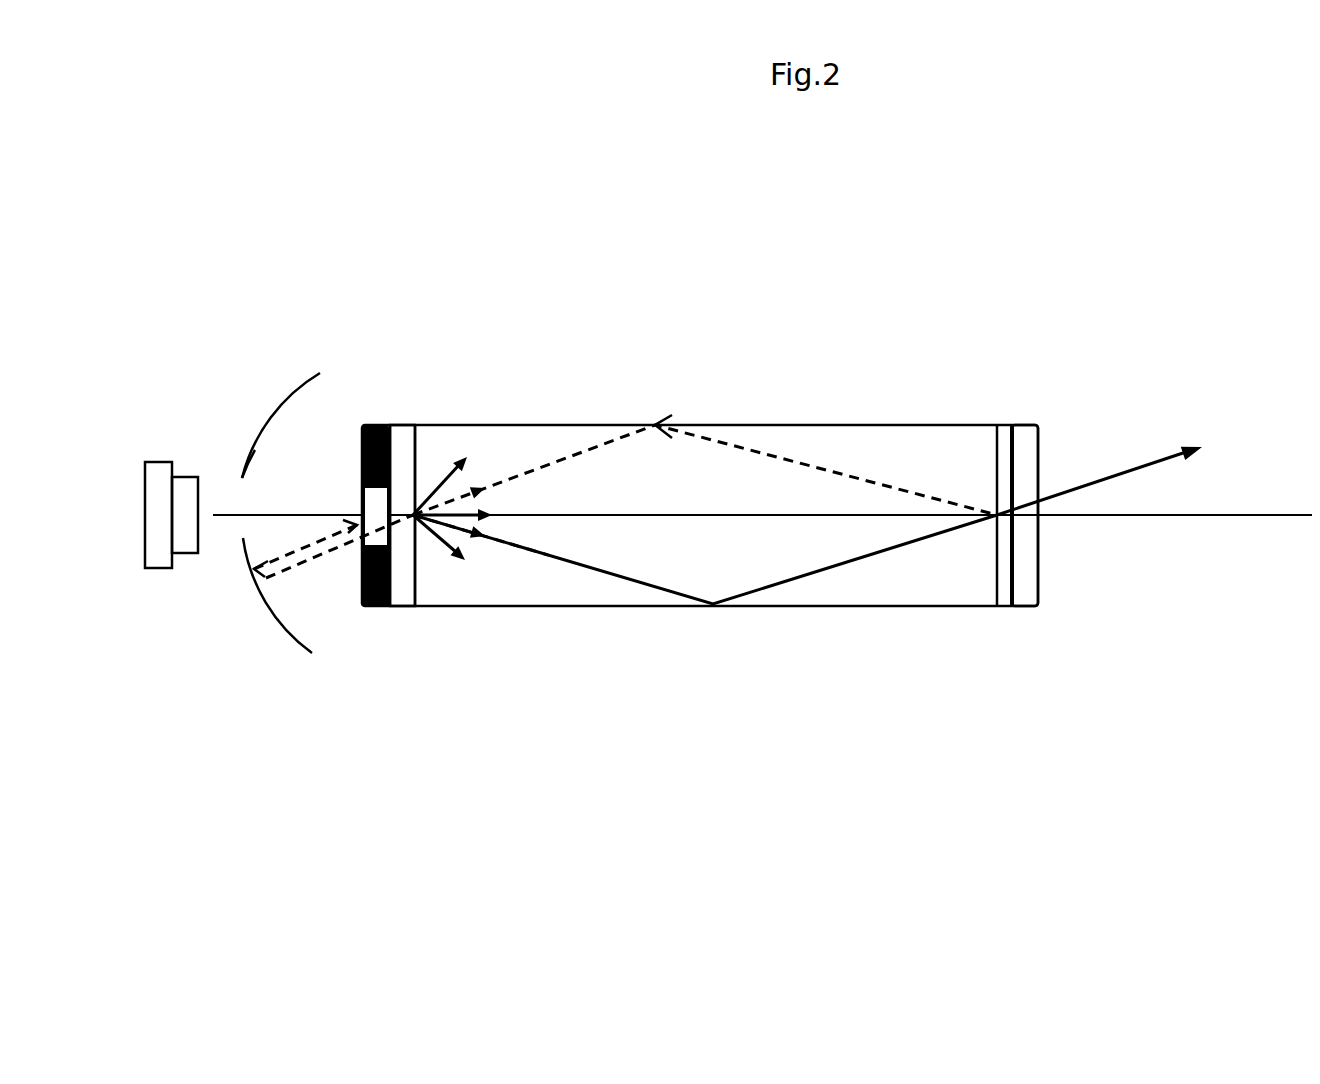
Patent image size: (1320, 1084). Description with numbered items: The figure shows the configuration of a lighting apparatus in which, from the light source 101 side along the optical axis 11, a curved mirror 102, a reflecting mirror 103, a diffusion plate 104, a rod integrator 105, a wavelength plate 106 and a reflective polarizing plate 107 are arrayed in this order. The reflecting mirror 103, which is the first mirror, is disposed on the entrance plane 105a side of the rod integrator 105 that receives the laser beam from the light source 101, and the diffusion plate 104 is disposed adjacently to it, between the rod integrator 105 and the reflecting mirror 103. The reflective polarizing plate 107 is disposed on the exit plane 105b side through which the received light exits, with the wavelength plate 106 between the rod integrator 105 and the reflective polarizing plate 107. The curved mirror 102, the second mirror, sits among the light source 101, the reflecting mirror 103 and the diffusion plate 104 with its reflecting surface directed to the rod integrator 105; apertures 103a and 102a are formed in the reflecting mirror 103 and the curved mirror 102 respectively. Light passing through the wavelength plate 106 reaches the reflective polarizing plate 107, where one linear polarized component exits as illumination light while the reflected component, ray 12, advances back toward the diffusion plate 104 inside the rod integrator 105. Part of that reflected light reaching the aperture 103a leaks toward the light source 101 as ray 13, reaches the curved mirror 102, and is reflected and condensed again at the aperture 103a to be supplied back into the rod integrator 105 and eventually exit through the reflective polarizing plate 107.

The optical axis 11 is at (1225, 517).
The ray 12 is at (903, 485).
The ray 13 is at (300, 558).
The light source 101 is at (162, 472).
The curved mirror 102 is at (288, 393).
The aperture 102a is at (231, 480).
The reflecting mirror 103 is at (373, 427).
The aperture 103a is at (362, 490).
The diffusion plate 104 is at (402, 598).
The rod integrator 105 is at (895, 600).
The entrance plane 105a is at (417, 453).
The exit plane 105b is at (995, 455).
The wavelength plate 106 is at (1002, 435).
The reflective polarizing plate 107 is at (1027, 597).